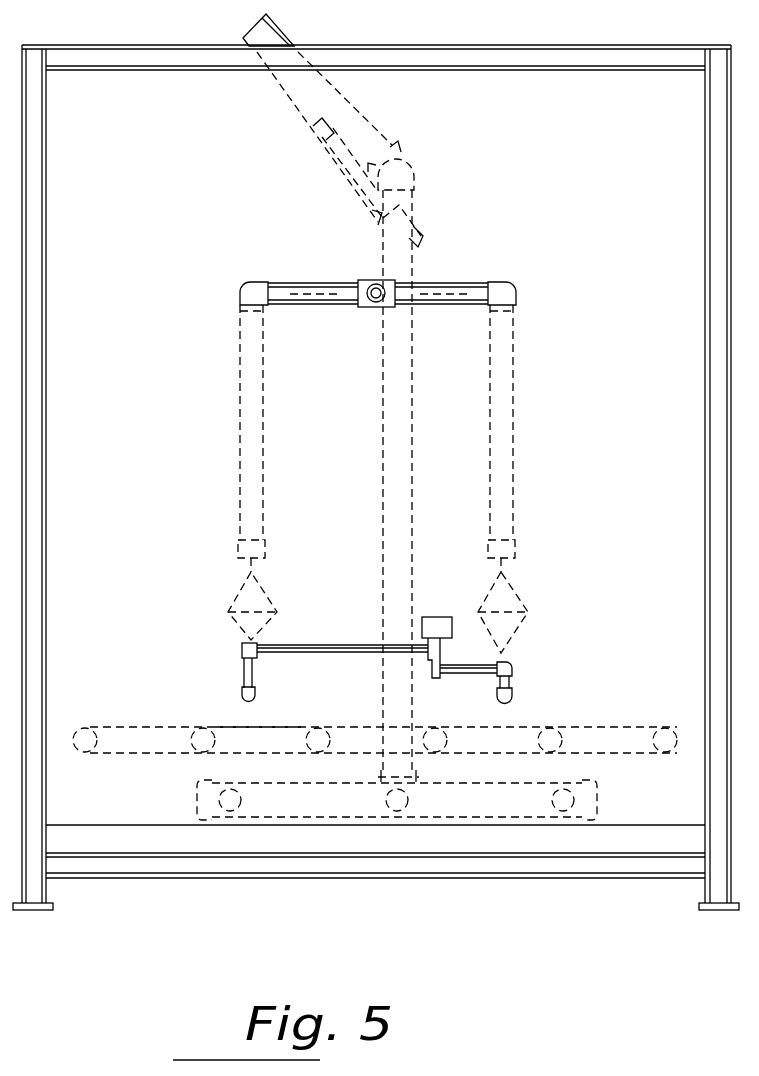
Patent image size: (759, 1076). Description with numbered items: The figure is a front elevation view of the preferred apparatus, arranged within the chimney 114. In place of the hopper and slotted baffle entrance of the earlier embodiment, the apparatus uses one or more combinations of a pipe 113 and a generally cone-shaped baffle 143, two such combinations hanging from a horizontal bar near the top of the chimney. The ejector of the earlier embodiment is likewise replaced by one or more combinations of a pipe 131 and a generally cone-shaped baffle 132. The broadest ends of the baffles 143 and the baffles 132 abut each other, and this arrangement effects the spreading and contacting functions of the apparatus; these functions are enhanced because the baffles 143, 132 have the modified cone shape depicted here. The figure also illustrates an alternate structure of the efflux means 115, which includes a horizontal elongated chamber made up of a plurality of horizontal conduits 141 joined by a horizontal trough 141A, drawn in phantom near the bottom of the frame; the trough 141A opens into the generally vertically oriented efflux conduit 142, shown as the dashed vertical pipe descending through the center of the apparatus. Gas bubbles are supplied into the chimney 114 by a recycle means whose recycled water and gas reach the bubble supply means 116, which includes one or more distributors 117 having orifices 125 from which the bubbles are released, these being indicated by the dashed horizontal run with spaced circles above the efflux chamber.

The pipe 113 is at (243, 372).
The chimney 114 is at (622, 181).
The efflux means 115 is at (398, 494).
The bubble supply means 116 is at (236, 736).
The distributor 117 is at (193, 740).
The orifices 125 is at (85, 727).
The pipe 131 is at (318, 653).
The generally cone-shaped baffle 132 is at (242, 628).
The horizontal conduits 141 is at (562, 802).
The horizontal trough 141A is at (435, 803).
The efflux conduit 142 is at (388, 385).
The generally cone-shaped baffle 143 is at (257, 592).